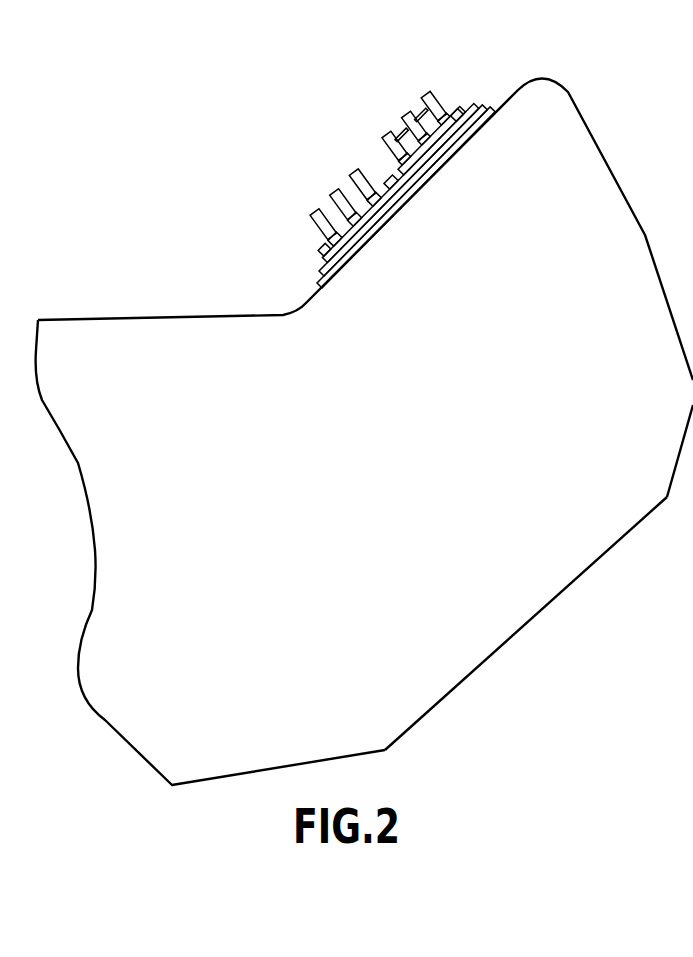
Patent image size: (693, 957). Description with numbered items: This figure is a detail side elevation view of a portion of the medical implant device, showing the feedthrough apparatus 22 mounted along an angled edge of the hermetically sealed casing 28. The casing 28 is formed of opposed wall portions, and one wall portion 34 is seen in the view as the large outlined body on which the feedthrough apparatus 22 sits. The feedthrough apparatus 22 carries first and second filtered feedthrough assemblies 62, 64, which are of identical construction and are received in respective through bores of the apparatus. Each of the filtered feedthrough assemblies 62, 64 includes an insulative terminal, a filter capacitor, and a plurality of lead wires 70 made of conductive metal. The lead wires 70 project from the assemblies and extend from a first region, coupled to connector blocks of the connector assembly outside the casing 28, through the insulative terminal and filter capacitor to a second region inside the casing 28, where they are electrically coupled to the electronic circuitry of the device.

The feedthrough apparatus 22 is at (472, 102).
The hermetically sealed casing 28 is at (492, 612).
The wall portion 34 is at (306, 508).
The first filtered feedthrough assembly 62 is at (327, 187).
The second filtered feedthrough assembly 64 is at (395, 118).
The lead wires 70 is at (327, 223).